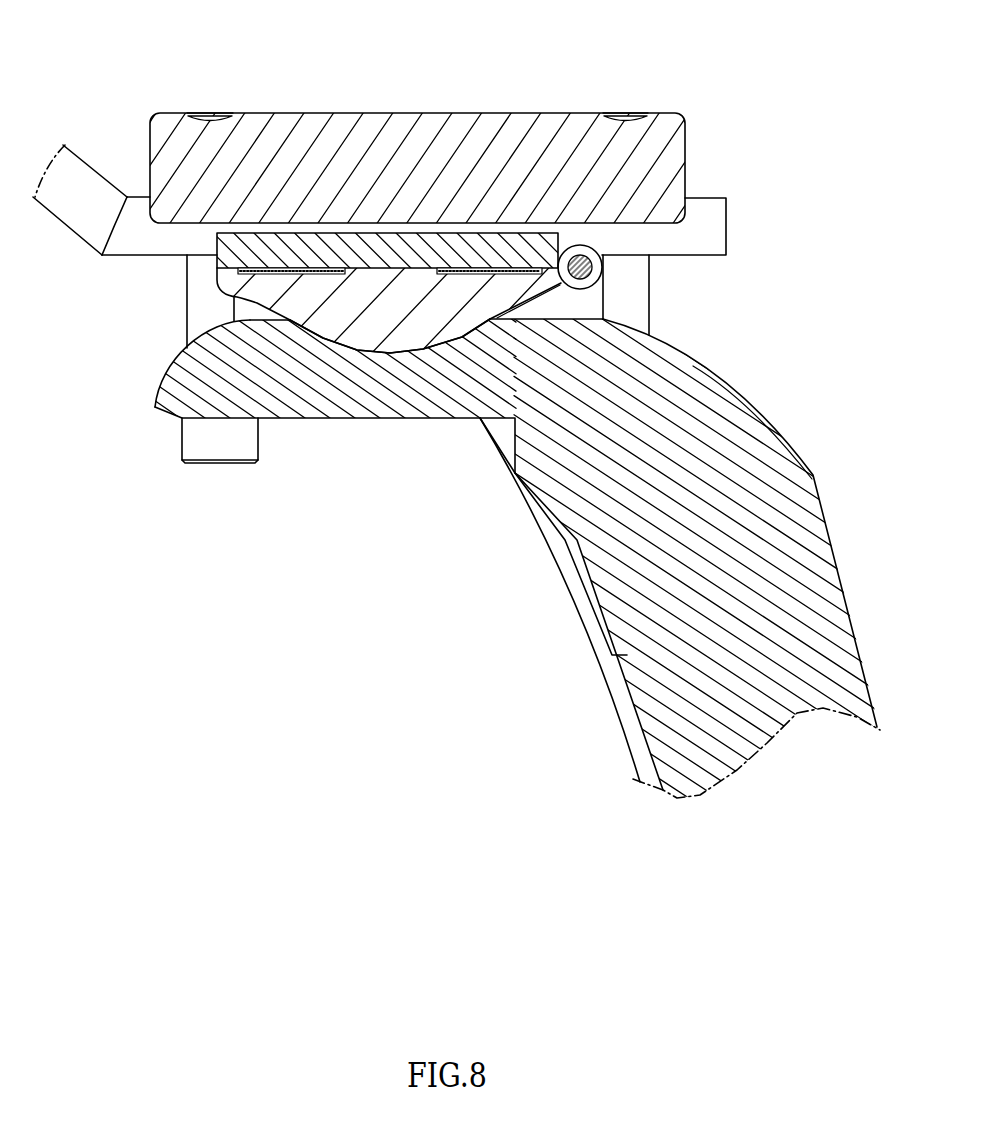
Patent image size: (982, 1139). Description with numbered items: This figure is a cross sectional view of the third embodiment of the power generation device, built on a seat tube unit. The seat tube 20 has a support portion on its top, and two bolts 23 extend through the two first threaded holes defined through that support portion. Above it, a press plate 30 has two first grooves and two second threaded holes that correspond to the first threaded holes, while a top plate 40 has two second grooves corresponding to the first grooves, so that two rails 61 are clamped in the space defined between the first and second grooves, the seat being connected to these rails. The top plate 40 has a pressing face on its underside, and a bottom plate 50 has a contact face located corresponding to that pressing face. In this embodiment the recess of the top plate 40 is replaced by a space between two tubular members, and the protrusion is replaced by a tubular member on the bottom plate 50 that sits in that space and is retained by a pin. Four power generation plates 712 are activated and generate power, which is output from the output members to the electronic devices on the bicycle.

The seat tube 20 is at (622, 610).
The bolts 23 is at (192, 437).
The press plate 30 is at (488, 130).
The top plate 40 is at (237, 250).
The bottom plate 50 is at (397, 327).
The rails 61 is at (708, 206).
The power generation plates 712 is at (237, 297).